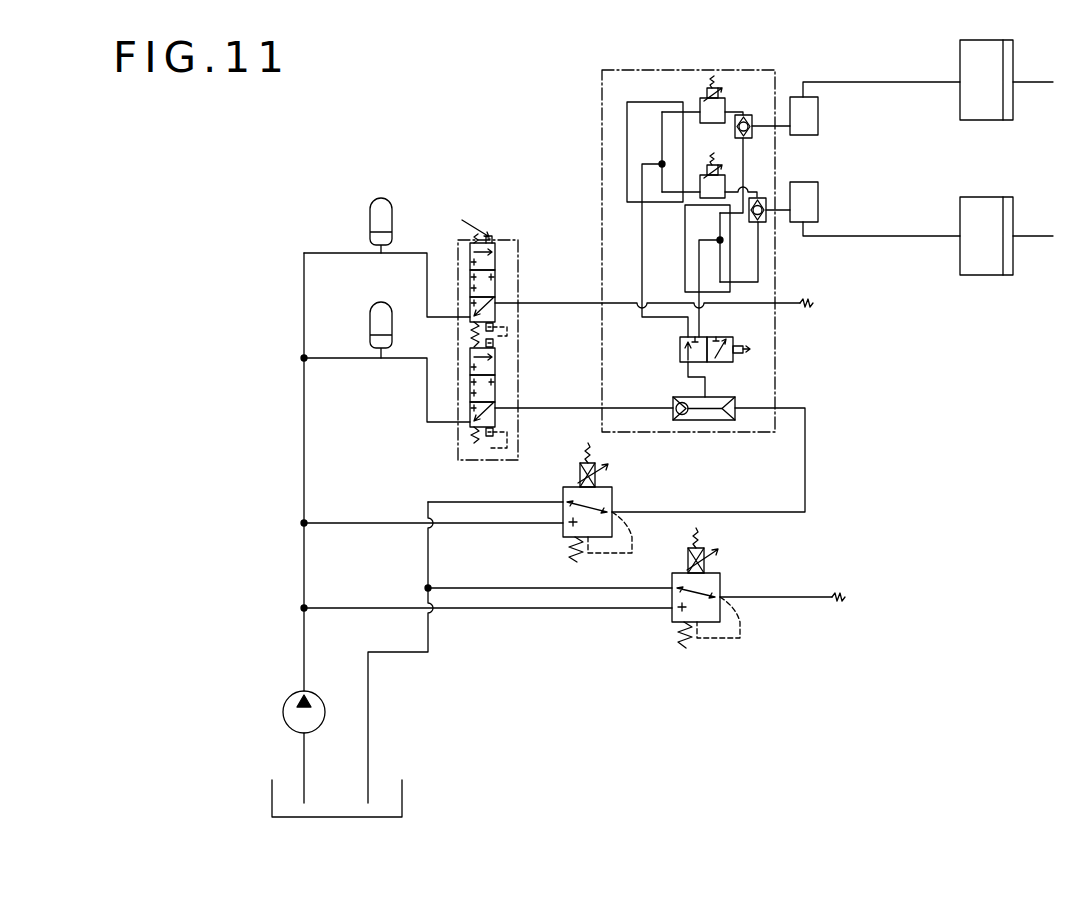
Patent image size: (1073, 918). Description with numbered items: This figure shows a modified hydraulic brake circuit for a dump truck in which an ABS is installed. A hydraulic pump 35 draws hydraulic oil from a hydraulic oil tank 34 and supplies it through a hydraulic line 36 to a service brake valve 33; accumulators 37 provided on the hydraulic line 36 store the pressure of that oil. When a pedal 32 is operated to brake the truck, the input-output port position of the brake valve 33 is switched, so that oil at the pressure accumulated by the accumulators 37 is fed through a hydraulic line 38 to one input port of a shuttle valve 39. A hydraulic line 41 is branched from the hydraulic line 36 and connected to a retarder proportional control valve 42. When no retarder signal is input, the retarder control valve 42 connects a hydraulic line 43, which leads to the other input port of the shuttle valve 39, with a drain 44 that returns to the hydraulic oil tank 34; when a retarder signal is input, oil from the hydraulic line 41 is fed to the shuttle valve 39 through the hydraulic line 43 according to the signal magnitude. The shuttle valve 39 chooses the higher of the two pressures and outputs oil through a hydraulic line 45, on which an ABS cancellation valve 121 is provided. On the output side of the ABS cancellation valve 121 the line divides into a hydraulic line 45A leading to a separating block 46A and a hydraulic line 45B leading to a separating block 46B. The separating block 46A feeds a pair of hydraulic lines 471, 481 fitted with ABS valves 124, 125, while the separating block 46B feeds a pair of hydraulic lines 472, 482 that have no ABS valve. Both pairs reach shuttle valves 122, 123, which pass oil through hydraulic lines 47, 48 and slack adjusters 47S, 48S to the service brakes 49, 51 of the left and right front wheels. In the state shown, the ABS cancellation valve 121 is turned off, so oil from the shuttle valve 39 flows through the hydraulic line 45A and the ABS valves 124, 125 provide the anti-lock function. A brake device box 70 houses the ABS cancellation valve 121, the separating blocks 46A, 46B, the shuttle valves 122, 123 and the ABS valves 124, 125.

The brake device box 70 is at (600, 140).
The separating block 46A is at (638, 110).
The hydraulic line 471 is at (690, 110).
The hydraulic line 481 is at (673, 203).
The ABS valve 124 is at (718, 105).
The ABS valve 125 is at (703, 178).
The shuttle valve 122 is at (754, 136).
The hydraulic line 47 is at (760, 123).
The slack adjuster 47S is at (808, 108).
The hydraulic line 472 is at (747, 157).
The shuttle valve 123 is at (763, 194).
The hydraulic line 48 is at (780, 213).
The slack adjuster 48S is at (808, 210).
The hydraulic line 482 is at (770, 263).
The separating block 46B is at (684, 250).
The hydraulic line 45A is at (662, 322).
The hydraulic line 45B is at (703, 318).
The ABS cancellation valve 121 is at (680, 352).
The hydraulic line 45 is at (707, 382).
The shuttle valve 39 is at (708, 421).
The hydraulic line 38 is at (553, 302).
The pedal 32 is at (475, 228).
The service brake valve 33 is at (520, 250).
The accumulator 37 is at (370, 216).
The hydraulic line 36 is at (303, 448).
The hydraulic line 41 is at (373, 526).
The drain 44 is at (407, 654).
The retarder proportional control valve 42 is at (603, 500).
The hydraulic line 43 is at (793, 513).
The hydraulic pump 35 is at (283, 709).
The hydraulic oil tank 34 is at (270, 795).
The service brake 49 is at (982, 110).
The service brake 51 is at (982, 265).